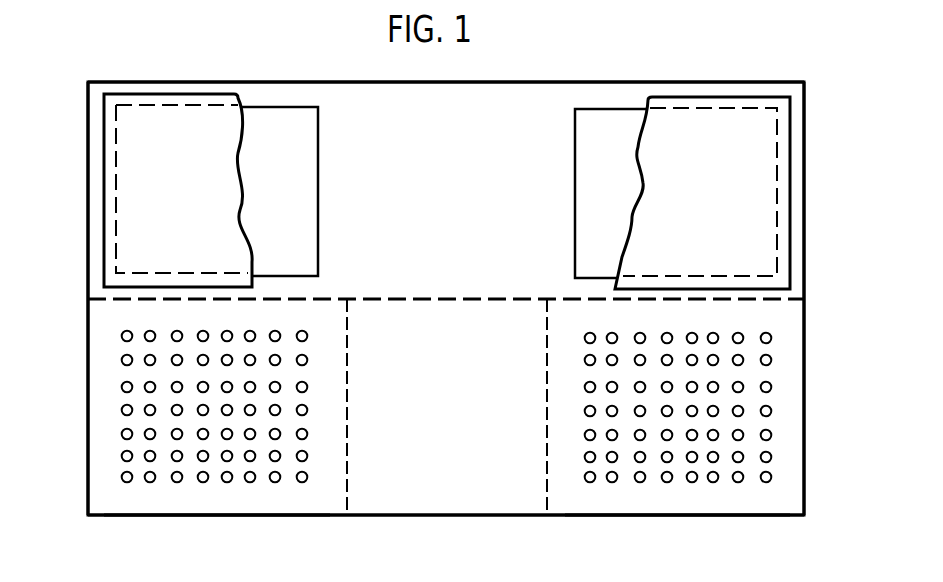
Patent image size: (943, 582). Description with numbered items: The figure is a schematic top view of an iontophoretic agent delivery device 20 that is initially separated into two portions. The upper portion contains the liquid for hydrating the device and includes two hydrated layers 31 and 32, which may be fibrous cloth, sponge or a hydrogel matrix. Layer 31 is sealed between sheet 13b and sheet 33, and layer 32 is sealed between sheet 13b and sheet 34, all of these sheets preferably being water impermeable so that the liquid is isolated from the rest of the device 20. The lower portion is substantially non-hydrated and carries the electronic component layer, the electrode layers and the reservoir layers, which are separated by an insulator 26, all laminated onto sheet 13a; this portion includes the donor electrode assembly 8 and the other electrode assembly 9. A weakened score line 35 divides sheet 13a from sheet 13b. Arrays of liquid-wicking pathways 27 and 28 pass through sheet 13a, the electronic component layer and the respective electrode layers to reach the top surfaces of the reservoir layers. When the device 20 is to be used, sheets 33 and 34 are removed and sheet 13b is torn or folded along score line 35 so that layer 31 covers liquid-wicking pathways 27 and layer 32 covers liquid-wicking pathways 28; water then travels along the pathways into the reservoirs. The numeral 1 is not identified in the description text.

The iontophoretic agent delivery device 20 is at (240, 58).
The sheet 34 is at (146, 94).
The layer 32 is at (263, 98).
The sheet 13b is at (452, 74).
The sheet 13a is at (118, 498).
The layer 31 is at (598, 120).
The sheet 33 is at (687, 97).
The weakened score line 35 is at (765, 300).
The liquid-wicking pathways 27 is at (121, 433).
The liquid-wicking pathways 28 is at (771, 361).
The electrode assembly 9 is at (78, 486).
The donor electrode assembly 8 is at (813, 483).
The electrode region 1 is at (640, 537).
The insulator 26 is at (448, 482).